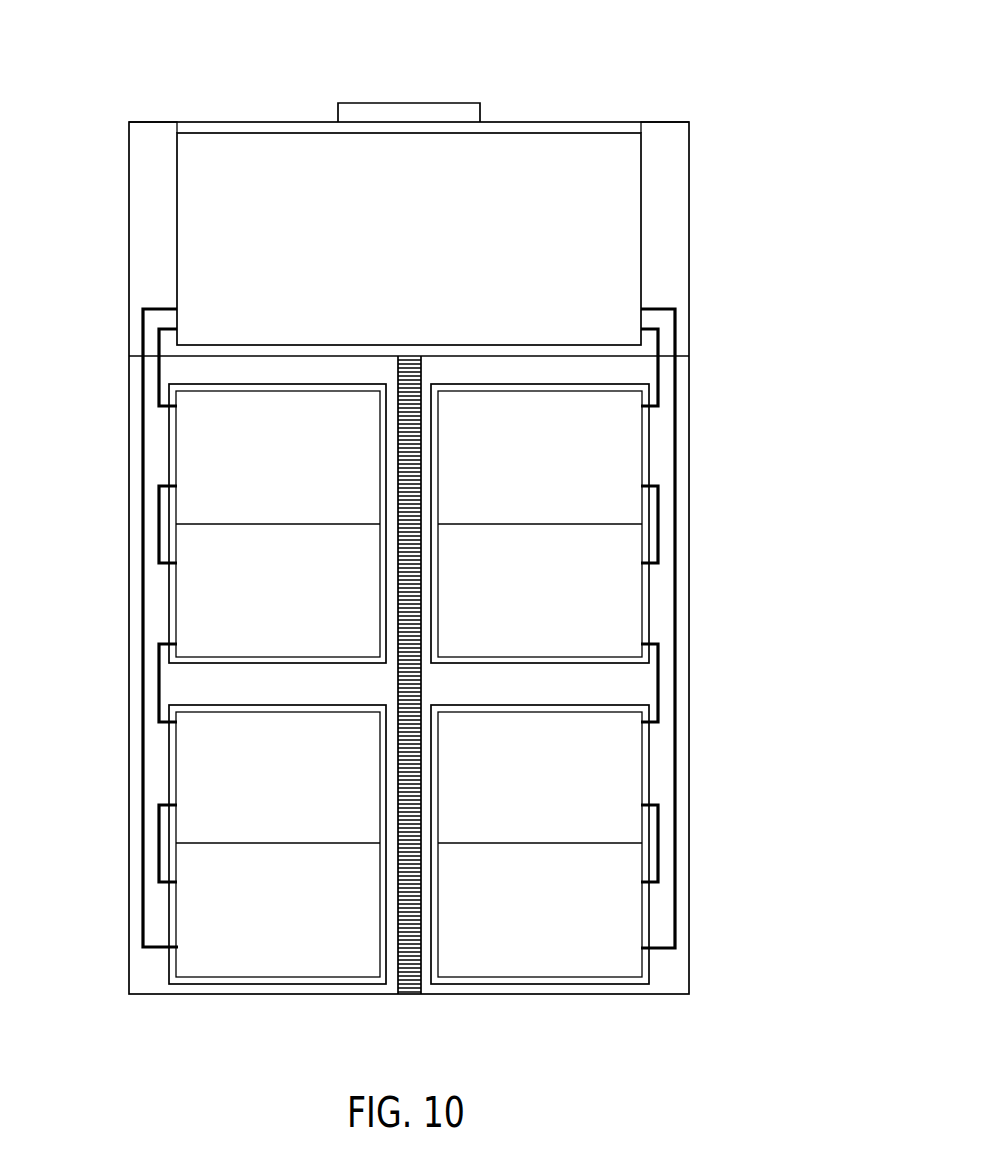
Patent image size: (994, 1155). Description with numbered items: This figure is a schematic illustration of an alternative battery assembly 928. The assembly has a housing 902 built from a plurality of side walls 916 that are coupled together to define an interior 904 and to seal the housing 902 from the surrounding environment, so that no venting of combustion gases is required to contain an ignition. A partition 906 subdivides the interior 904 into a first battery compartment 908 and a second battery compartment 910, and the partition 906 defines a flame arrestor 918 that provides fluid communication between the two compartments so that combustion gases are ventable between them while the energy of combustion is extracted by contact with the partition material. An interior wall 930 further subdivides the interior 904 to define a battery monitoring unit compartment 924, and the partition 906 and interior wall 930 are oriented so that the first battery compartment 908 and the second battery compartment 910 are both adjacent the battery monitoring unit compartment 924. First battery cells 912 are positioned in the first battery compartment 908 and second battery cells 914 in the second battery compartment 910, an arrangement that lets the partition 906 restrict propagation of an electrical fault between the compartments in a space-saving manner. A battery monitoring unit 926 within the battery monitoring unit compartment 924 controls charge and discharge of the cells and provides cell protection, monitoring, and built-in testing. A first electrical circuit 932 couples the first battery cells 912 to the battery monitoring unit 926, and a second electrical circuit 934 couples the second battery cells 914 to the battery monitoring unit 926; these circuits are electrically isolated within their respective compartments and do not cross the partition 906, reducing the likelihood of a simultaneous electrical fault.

The housing 902 is at (436, 579).
The interior 904 is at (658, 145).
The partition 906 is at (417, 708).
The first battery compartment 908 is at (146, 963).
The second battery compartment 910 is at (672, 963).
The first battery cell 912 is at (289, 467).
The second battery cell 914 is at (557, 464).
The side wall 916 is at (126, 942).
The flame arrestor 918 is at (398, 982).
The battery monitoring unit compartment 924 is at (155, 145).
The battery monitoring unit 926 is at (426, 251).
The battery assembly 928 is at (436, 533).
The interior wall 930 is at (645, 357).
The first electrical circuit 932 is at (155, 293).
The second electrical circuit 934 is at (670, 292).